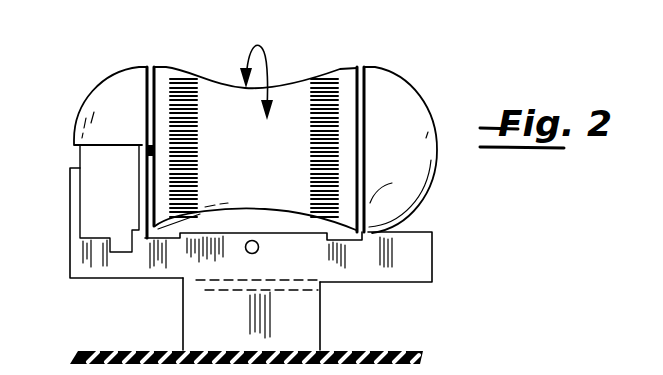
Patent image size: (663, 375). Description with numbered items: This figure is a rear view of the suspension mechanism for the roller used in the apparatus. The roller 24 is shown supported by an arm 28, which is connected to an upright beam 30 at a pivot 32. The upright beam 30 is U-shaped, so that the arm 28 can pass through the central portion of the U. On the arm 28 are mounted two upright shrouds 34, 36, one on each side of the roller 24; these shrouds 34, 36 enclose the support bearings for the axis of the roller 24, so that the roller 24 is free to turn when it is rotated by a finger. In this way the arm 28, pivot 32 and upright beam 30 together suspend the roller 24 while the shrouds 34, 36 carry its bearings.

The roller 24 is at (288, 102).
The arm 28 is at (442, 262).
The upright beam 30 is at (307, 312).
The pivot 32 is at (248, 253).
The upright shroud 34 is at (106, 106).
The upright shroud 36 is at (413, 107).